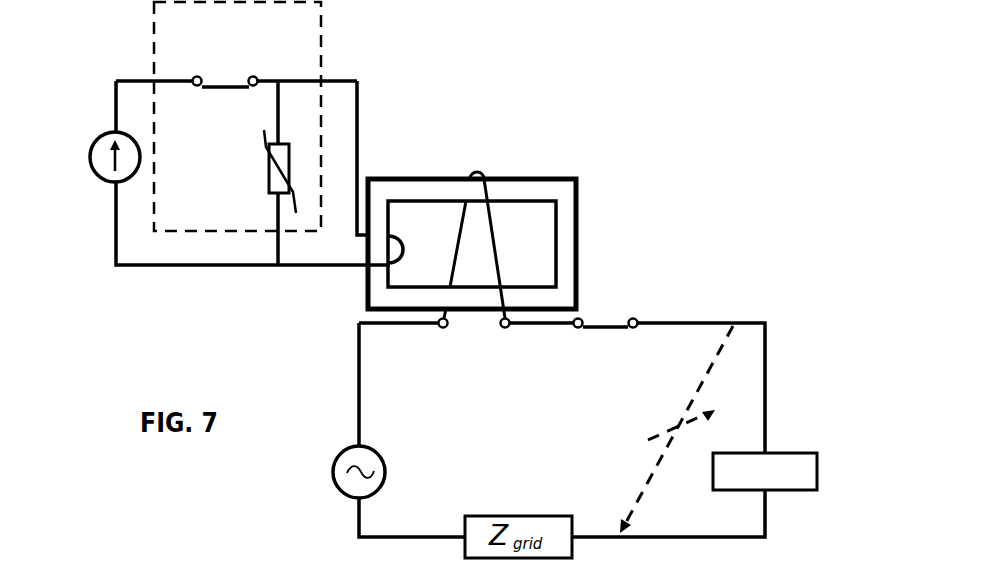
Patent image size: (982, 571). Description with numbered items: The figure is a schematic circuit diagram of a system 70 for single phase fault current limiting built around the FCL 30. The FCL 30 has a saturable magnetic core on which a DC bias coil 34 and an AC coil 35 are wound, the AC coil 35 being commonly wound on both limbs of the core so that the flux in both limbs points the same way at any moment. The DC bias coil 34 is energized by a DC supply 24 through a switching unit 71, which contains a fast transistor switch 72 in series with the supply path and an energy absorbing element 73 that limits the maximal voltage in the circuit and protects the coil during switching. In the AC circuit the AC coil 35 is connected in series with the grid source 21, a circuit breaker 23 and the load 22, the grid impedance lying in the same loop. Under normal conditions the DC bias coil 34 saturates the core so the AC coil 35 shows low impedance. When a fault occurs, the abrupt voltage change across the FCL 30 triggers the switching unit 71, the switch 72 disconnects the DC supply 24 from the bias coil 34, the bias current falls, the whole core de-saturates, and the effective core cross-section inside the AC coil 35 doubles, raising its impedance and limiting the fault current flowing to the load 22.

The system 70 is at (710, 200).
The switching unit 71 is at (154, 30).
The fast transistor switch 72 is at (213, 88).
The energy absorbing element 73 is at (268, 185).
The DC supply 24 is at (91, 157).
The FCL 30 is at (548, 168).
The DC bias coil 34 is at (403, 213).
The AC coil 35 is at (487, 143).
The circuit breaker 23 is at (620, 329).
The grid voltage source 21 is at (386, 462).
The load 22 is at (818, 465).